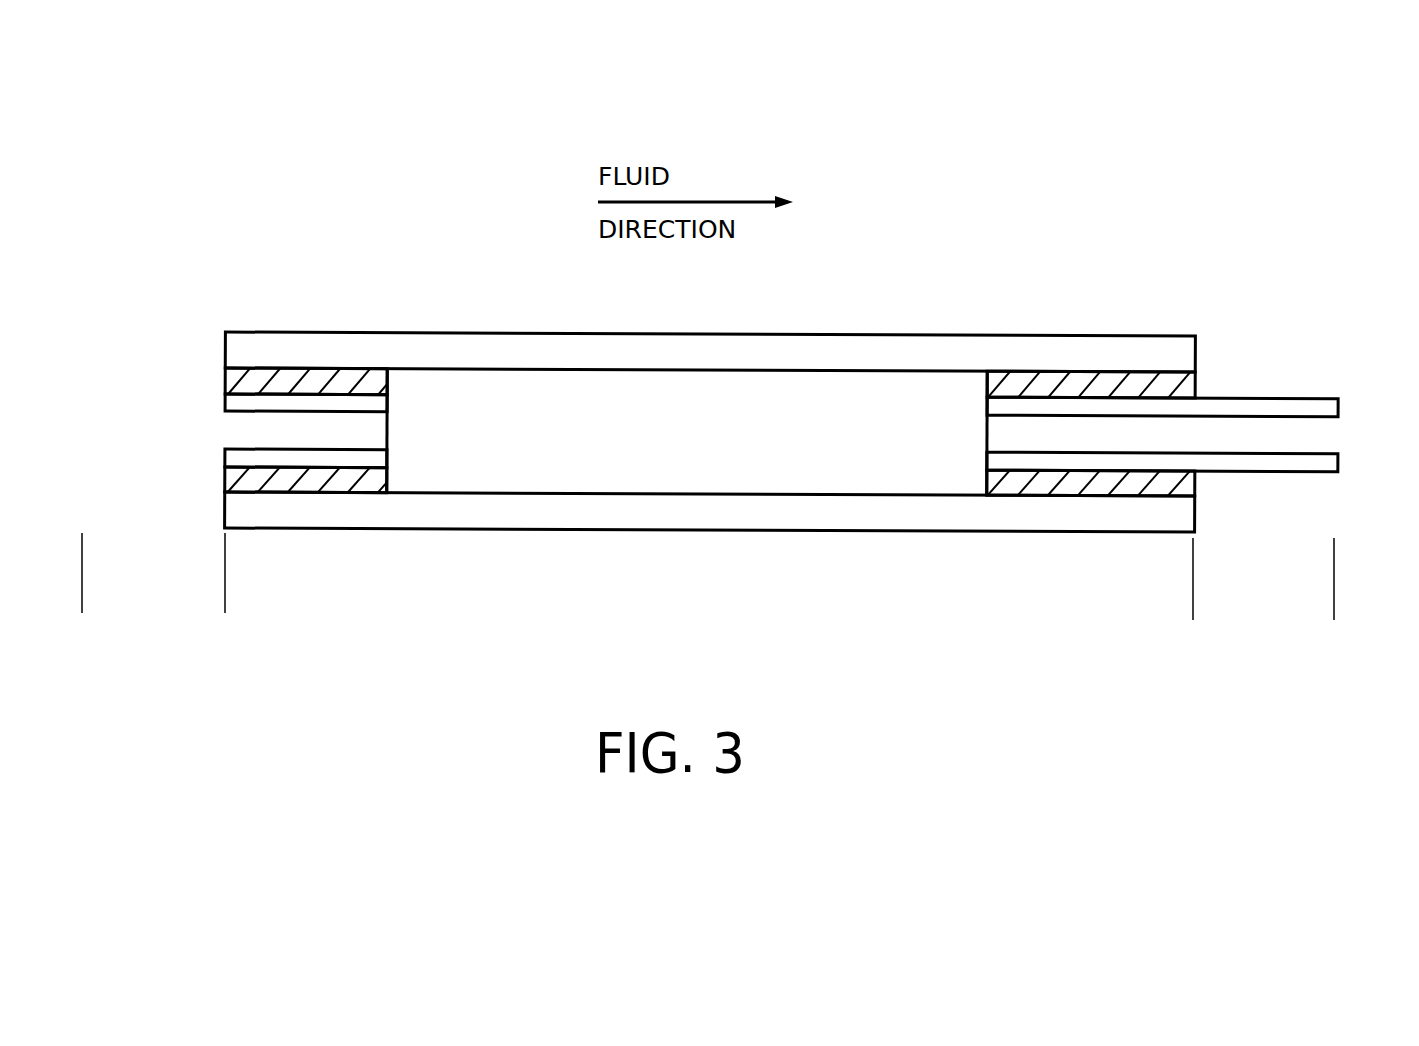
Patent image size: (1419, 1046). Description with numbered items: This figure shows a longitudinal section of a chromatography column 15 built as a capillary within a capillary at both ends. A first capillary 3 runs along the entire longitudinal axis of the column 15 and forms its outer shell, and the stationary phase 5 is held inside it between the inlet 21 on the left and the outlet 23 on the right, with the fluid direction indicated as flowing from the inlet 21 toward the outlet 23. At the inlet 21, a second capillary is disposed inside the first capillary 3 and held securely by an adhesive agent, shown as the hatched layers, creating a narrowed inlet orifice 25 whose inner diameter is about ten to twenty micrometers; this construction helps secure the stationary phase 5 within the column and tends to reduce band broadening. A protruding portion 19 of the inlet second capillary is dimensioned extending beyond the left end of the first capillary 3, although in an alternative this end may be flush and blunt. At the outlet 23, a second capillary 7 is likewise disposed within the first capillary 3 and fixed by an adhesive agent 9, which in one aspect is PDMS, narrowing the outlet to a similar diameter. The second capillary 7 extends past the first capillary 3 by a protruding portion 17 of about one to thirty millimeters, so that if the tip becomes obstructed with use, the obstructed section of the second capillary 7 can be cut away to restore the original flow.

The first capillary 3 is at (225, 347).
The stationary phase 5 is at (840, 390).
The adhesive agent 9 is at (1195, 378).
The second capillary 7 is at (1307, 398).
The inlet orifice 25 is at (220, 428).
The inlet 21 is at (350, 283).
The outlet 23 is at (1076, 286).
The column 15 is at (914, 633).
The protruding portion 19 is at (212, 599).
The protruding portion 17 is at (1206, 607).